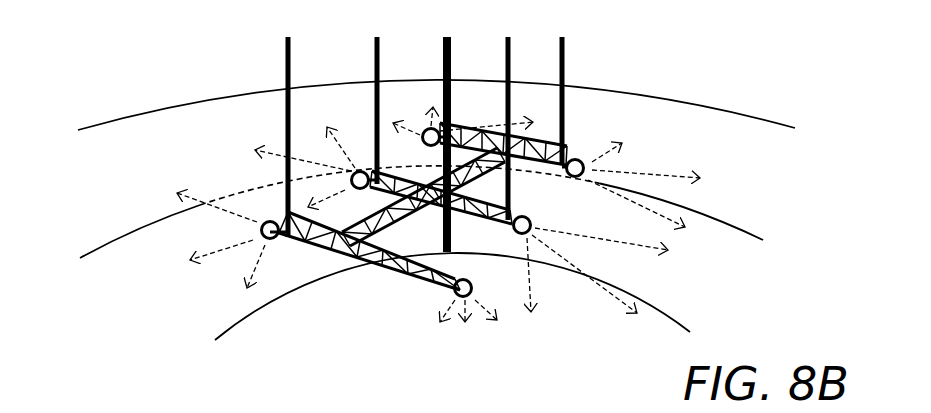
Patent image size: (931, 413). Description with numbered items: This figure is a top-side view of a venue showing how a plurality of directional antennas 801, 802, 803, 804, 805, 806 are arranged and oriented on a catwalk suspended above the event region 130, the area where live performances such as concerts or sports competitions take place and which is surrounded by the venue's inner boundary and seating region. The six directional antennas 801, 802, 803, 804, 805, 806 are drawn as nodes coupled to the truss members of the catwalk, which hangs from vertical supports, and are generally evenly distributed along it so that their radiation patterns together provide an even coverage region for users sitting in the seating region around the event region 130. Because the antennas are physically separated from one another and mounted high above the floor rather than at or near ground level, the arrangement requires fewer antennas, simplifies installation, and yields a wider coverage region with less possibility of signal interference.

The event region 130 is at (333, 303).
The directional antenna 801 is at (262, 222).
The directional antenna 802 is at (357, 171).
The directional antenna 803 is at (429, 128).
The directional antenna 804 is at (456, 292).
The directional antenna 805 is at (533, 221).
The directional antenna 806 is at (582, 160).